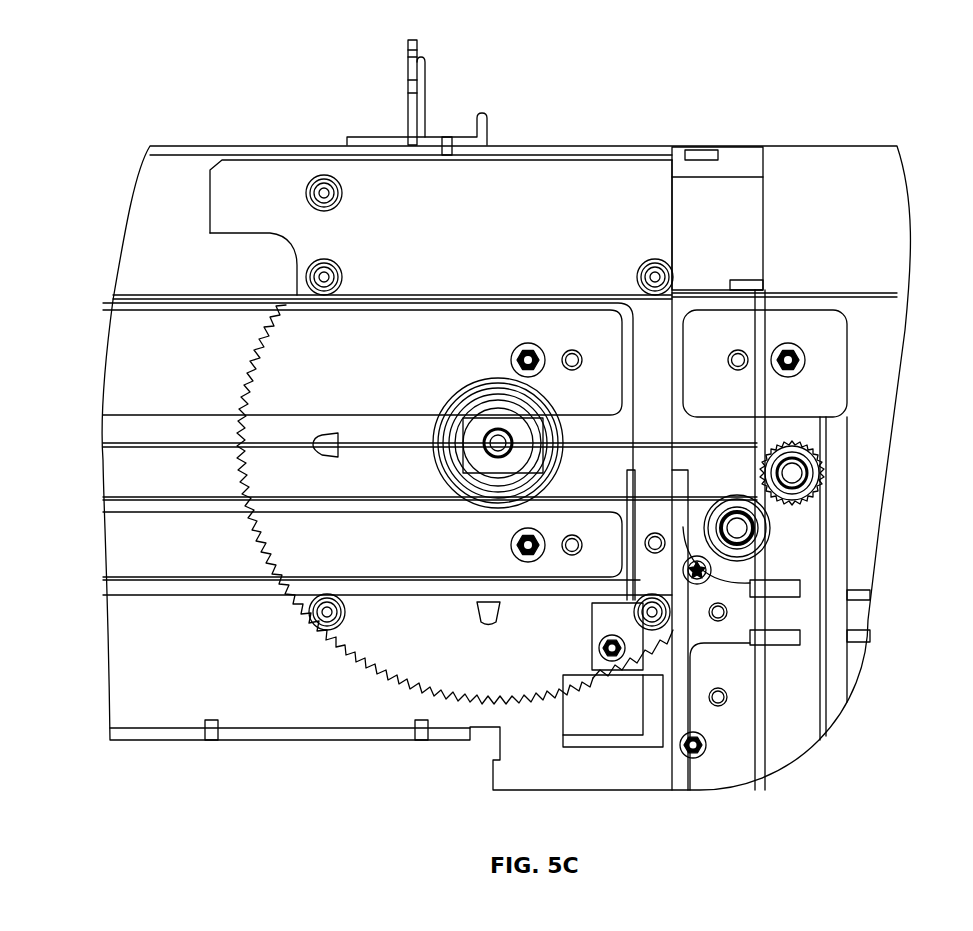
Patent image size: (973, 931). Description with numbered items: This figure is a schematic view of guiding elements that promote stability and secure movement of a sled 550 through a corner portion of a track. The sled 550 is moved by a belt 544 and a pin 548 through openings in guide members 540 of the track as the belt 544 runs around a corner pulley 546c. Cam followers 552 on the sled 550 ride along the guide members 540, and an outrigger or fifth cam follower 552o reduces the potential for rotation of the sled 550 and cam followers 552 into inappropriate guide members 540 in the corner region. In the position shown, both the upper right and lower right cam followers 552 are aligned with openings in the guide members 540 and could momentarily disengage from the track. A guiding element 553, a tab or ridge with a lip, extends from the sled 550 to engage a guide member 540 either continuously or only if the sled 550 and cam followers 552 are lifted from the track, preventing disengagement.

The sled 550 is at (560, 172).
The outrigger or fifth cam follower 552o is at (343, 196).
The cam followers 552 is at (343, 280).
The guiding element 553 is at (743, 285).
The guide members 540 is at (203, 296).
The pin 548 is at (497, 438).
The belt 544 is at (232, 495).
The corner pulley 546c is at (822, 470).